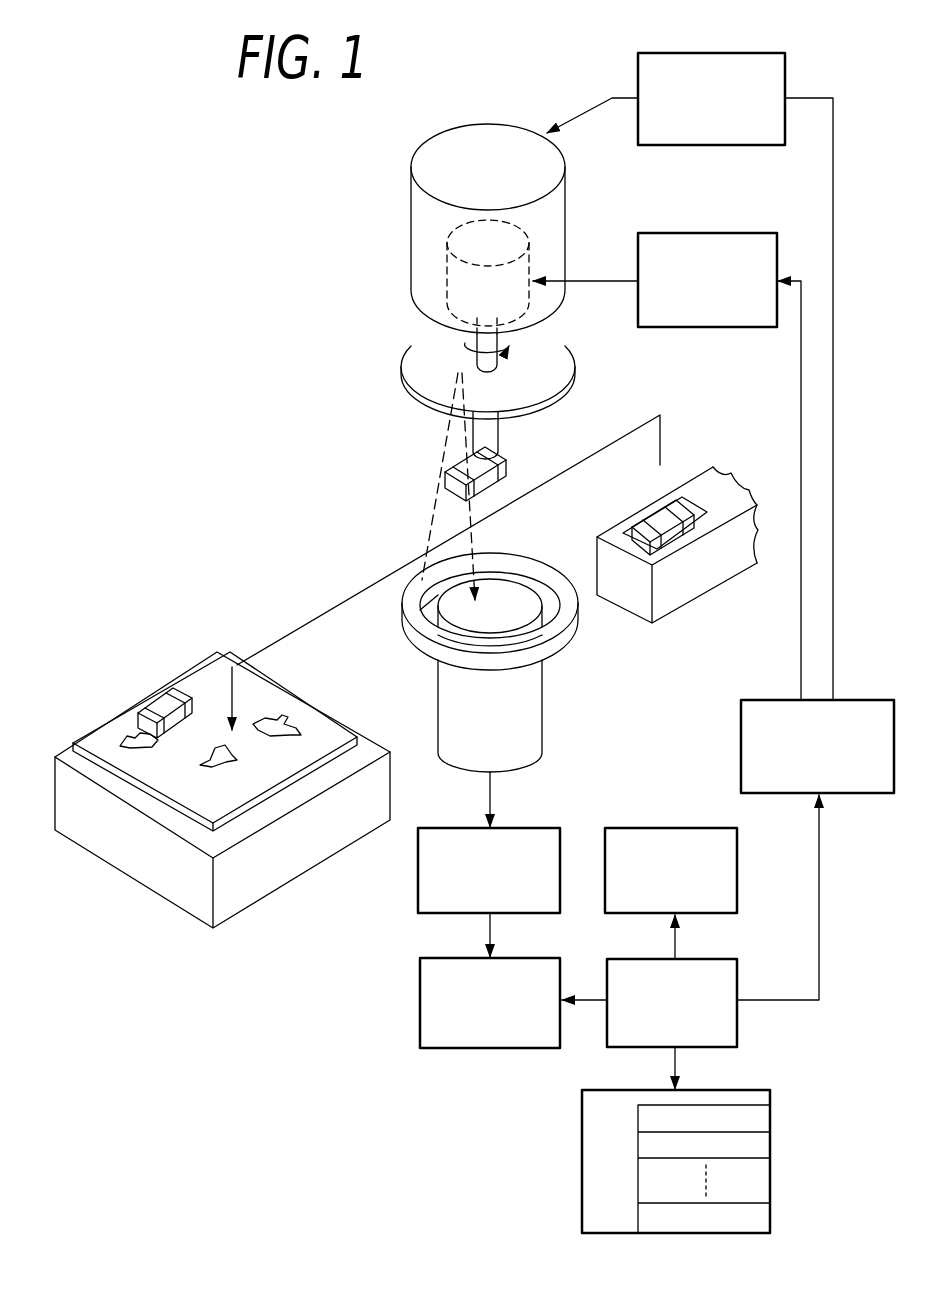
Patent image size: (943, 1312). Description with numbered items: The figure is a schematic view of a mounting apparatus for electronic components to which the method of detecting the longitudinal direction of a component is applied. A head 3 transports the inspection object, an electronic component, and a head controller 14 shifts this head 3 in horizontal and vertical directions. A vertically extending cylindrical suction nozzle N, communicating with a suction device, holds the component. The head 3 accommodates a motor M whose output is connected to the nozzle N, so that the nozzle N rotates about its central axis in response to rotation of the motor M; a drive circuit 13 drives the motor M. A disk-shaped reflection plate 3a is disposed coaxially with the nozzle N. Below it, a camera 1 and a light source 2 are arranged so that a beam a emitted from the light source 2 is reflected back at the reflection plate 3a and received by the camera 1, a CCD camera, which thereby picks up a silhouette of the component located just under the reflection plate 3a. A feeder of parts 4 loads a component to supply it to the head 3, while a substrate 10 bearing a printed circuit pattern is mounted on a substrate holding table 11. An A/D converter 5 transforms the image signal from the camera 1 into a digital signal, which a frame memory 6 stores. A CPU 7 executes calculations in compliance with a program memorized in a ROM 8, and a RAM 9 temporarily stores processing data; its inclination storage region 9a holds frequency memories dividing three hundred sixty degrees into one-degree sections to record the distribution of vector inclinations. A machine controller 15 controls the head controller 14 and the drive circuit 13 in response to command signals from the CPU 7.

The camera 1 is at (542, 717).
The light source 2 is at (565, 652).
The head 3 is at (381, 317).
The reflection plate 3a is at (560, 400).
The motor M is at (529, 255).
The suction nozzle N is at (473, 437).
The beam a is at (431, 528).
The feeder of parts 4 is at (689, 568).
The A/D converter 5 is at (528, 827).
The frame memory 6 is at (543, 957).
The CPU 7 is at (722, 956).
The ROM 8 is at (717, 826).
The RAM 9 is at (702, 1143).
The inclination storage region 9a is at (752, 1103).
The substrate 10 is at (183, 808).
The substrate holding table 11 is at (258, 902).
The drive circuit 13 is at (762, 230).
The head controller 14 is at (763, 50).
The machine controller 15 is at (863, 696).